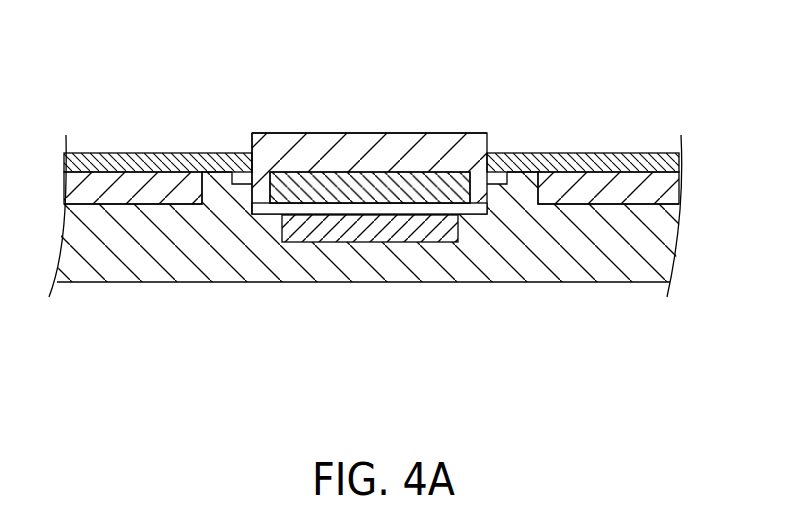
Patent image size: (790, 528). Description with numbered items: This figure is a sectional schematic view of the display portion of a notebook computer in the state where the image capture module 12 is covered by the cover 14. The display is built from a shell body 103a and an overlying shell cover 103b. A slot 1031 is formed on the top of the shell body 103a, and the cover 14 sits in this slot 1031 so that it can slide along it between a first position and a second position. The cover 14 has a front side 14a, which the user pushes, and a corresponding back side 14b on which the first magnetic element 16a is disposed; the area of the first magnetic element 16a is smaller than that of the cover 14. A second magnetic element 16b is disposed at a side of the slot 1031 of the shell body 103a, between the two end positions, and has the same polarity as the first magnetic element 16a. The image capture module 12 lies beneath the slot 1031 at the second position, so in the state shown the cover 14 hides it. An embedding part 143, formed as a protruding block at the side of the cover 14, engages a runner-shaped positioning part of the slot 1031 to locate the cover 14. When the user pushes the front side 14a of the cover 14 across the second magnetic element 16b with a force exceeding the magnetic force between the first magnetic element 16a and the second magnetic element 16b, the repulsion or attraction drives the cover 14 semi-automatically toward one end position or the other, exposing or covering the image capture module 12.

The shell body 103a is at (167, 260).
The shell cover 103b is at (167, 165).
The slot 1031 is at (472, 205).
The second magnetic element 16b is at (107, 188).
The first magnetic element 16a is at (318, 188).
The cover 14 is at (388, 147).
The front side 14a is at (438, 134).
The back side 14b is at (265, 207).
The embedding part 143 is at (508, 176).
The image capture module 12 is at (375, 232).